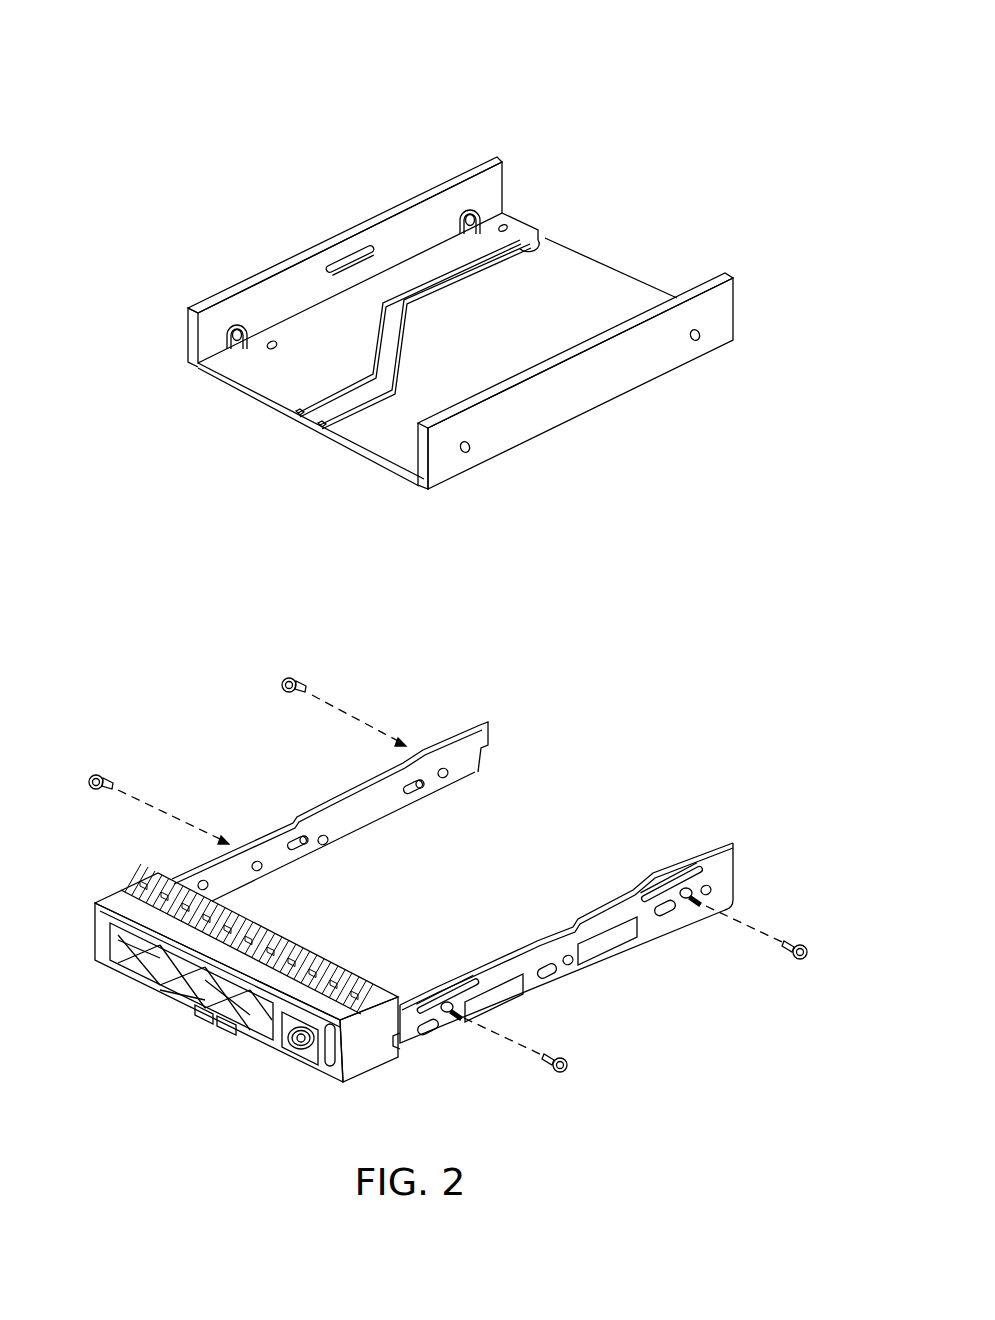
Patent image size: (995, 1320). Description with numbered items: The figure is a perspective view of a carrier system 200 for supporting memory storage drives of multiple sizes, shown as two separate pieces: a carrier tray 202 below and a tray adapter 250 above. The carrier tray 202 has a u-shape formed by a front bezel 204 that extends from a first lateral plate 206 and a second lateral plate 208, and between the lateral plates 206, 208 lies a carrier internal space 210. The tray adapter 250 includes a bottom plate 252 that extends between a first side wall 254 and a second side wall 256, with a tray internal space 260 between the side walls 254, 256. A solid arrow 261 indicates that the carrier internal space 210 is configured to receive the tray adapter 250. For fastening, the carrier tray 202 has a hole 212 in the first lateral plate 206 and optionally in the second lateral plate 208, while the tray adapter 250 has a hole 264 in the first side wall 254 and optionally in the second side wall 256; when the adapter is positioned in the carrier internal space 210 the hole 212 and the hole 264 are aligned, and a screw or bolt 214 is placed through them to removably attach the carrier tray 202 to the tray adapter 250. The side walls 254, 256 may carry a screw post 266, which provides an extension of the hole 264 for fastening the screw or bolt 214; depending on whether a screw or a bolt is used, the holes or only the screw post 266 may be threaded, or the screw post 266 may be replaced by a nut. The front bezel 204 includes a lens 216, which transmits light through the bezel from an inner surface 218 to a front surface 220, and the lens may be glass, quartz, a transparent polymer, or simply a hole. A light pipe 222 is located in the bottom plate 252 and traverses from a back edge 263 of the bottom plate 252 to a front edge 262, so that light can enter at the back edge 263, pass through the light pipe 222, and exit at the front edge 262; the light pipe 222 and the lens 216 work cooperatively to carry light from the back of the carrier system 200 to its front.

The carrier system 200 is at (198, 58).
The carrier tray 202 is at (778, 854).
The front bezel 204 is at (147, 932).
The first lateral plate 206 is at (627, 910).
The second lateral plate 208 is at (302, 812).
The carrier internal space 210 is at (736, 826).
The hole 212 is at (452, 765).
The screw or bolt 214 is at (289, 677).
The lens 216 is at (205, 1012).
The inner surface 218 is at (330, 946).
The front surface 220 is at (150, 985).
The light pipe 222 is at (503, 213).
The tray adapter 250 is at (777, 284).
The bottom plate 252 is at (242, 366).
The first side wall 254 is at (628, 368).
The second side wall 256 is at (417, 200).
The tray internal space 260 is at (538, 172).
The solid arrow 261 is at (510, 688).
The front edge 262 is at (252, 397).
The back edge 263 is at (632, 276).
The hole 264 is at (226, 337).
The screw post 266 is at (238, 322).